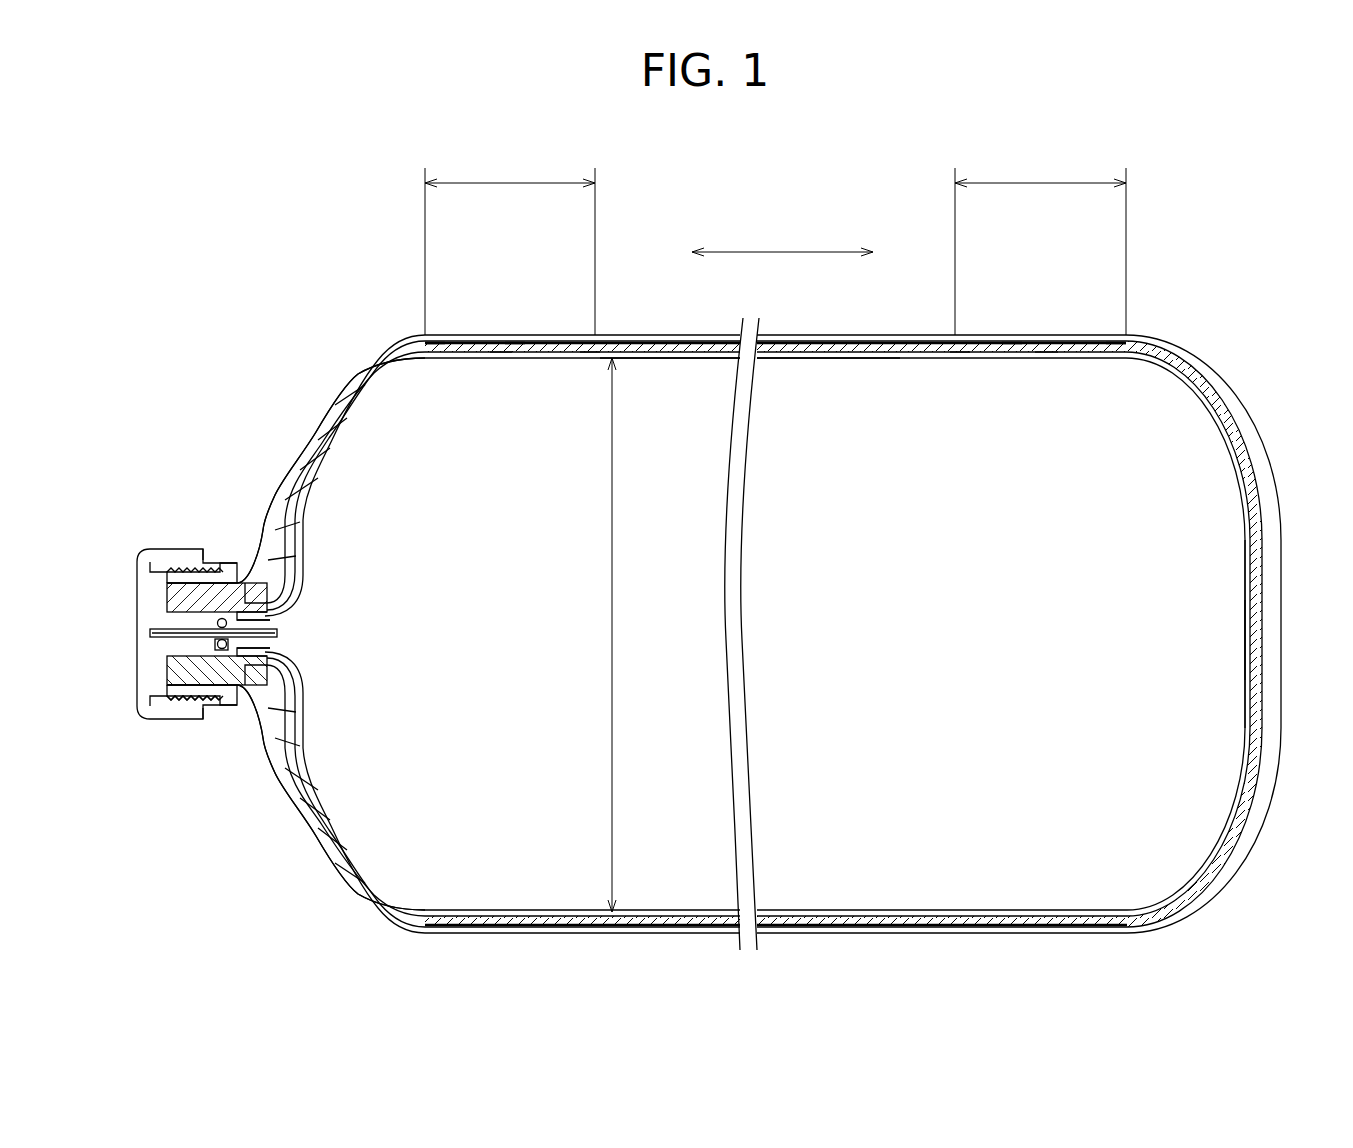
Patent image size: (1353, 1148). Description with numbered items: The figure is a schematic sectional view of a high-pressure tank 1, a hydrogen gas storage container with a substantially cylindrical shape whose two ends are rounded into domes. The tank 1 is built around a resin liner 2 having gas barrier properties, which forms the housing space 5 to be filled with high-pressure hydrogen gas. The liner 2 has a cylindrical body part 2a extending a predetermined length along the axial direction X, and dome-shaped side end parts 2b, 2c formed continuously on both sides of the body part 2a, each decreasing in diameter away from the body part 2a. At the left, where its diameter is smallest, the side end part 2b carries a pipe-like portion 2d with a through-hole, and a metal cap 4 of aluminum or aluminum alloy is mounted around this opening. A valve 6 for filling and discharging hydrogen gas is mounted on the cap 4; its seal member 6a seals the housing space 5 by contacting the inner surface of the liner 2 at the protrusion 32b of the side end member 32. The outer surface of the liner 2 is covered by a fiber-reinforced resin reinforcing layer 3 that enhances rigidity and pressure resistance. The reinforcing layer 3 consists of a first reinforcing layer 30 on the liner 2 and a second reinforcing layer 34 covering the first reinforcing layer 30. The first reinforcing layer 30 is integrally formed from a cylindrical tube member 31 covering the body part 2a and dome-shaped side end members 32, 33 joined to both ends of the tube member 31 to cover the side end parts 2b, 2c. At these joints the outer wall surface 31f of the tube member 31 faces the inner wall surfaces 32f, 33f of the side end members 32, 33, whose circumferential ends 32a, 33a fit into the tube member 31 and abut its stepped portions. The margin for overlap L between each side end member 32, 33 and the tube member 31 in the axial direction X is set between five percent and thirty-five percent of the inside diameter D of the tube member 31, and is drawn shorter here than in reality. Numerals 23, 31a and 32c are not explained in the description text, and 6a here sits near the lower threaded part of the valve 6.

The high-pressure tank 1 is at (241, 321).
The liner 2 is at (878, 360).
The body part 2a is at (663, 360).
The side end part 2b is at (346, 415).
The side end part 2c is at (1246, 572).
The pipe-like portion 2d is at (213, 688).
The reinforcing layer 3 is at (1300, 408).
The cap 4 is at (229, 580).
The housing space 5 is at (921, 860).
The valve 6 is at (176, 568).
The seal member 6a is at (238, 686).
The end portion of liner dome 23 is at (1246, 637).
The first reinforcing layer 30 is at (880, 345).
The tube member 31 is at (823, 342).
The end of hoop winding layer 31a is at (432, 337).
The outer wall surface 31f is at (517, 340).
The side end member 32 is at (298, 490).
The circumferential end 32a is at (595, 343).
The protrusion 32b is at (188, 594).
The stem portion 32c is at (280, 637).
The inner wall surface 32f is at (503, 353).
The side end member 33 is at (1262, 620).
The circumferential end 33a is at (960, 342).
The inner wall surface 33f is at (1048, 353).
The second reinforcing layer 34 is at (1248, 430).
The inside diameter D is at (601, 635).
The axial direction X is at (782, 241).
The margin for overlap L is at (775, 244).